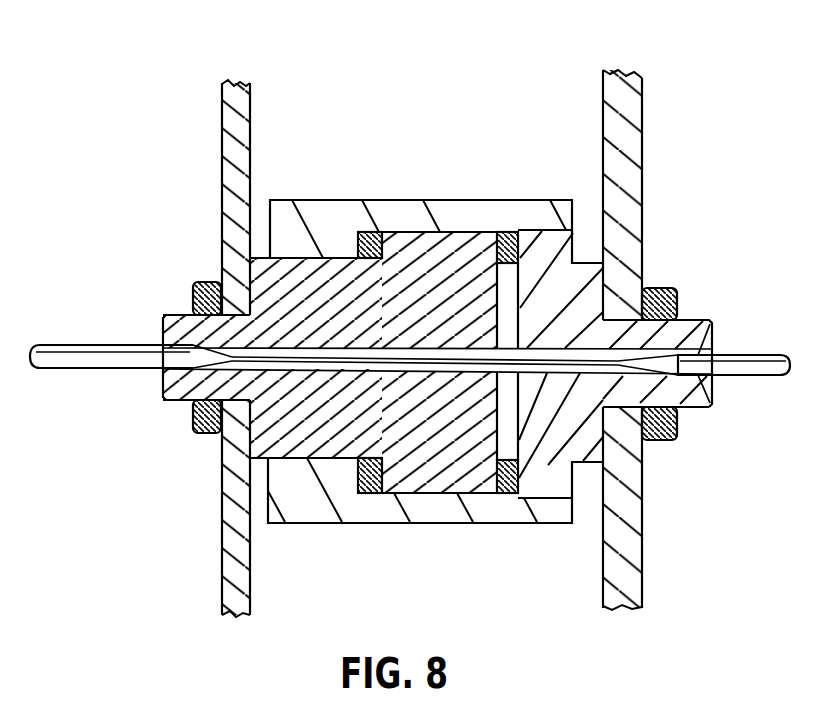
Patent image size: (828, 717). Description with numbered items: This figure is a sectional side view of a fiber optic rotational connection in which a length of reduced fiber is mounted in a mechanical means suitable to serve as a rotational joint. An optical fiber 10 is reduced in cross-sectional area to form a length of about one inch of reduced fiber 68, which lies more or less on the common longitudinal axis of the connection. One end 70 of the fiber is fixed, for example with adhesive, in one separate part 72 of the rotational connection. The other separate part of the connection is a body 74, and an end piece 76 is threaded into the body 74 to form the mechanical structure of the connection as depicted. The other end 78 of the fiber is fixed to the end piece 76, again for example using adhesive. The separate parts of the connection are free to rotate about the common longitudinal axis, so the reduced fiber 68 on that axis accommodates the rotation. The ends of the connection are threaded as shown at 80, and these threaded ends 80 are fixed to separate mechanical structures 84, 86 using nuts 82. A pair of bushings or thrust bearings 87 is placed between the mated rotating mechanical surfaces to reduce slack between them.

The optical fiber 10 is at (85, 345).
The reduced fiber 68 is at (423, 360).
The one end of the fiber 70 is at (173, 398).
The separate part of the rotational connection 72 is at (300, 456).
The body of the connection 74 is at (450, 510).
The end piece 76 is at (531, 503).
The other end of the fiber 78 is at (685, 348).
The threaded ends of the connection 80 is at (167, 315).
The nuts 82 is at (195, 290).
The mechanical structure 84 is at (250, 92).
The mechanical structure 86 is at (618, 82).
The bushings or thrust bearings 87 is at (357, 230).